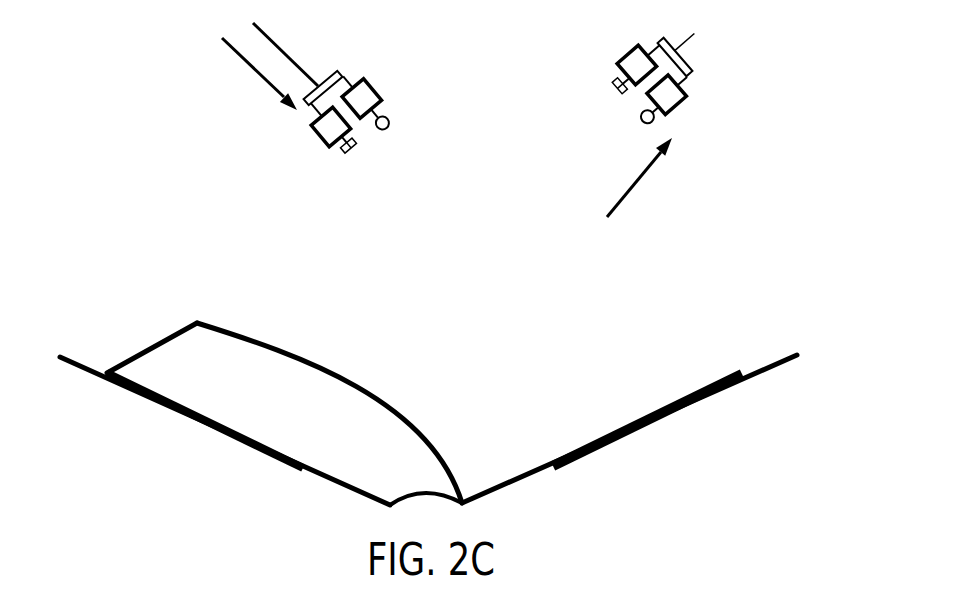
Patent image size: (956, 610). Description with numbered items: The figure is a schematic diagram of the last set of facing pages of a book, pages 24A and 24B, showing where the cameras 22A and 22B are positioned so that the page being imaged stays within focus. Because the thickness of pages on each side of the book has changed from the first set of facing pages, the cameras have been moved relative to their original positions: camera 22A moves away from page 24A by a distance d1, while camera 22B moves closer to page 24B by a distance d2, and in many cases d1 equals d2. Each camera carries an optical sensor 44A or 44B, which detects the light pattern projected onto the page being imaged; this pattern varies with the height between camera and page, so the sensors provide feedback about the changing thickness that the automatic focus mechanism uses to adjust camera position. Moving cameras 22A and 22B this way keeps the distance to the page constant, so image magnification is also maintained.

The camera 22A is at (632, 53).
The camera 22B is at (322, 138).
The optical sensor 44A is at (687, 100).
The optical sensor 44B is at (372, 78).
The last page of A side 24A is at (268, 345).
The last page of B side 24B is at (630, 420).
The distance d1 is at (639, 177).
The distance d2 is at (270, 66).